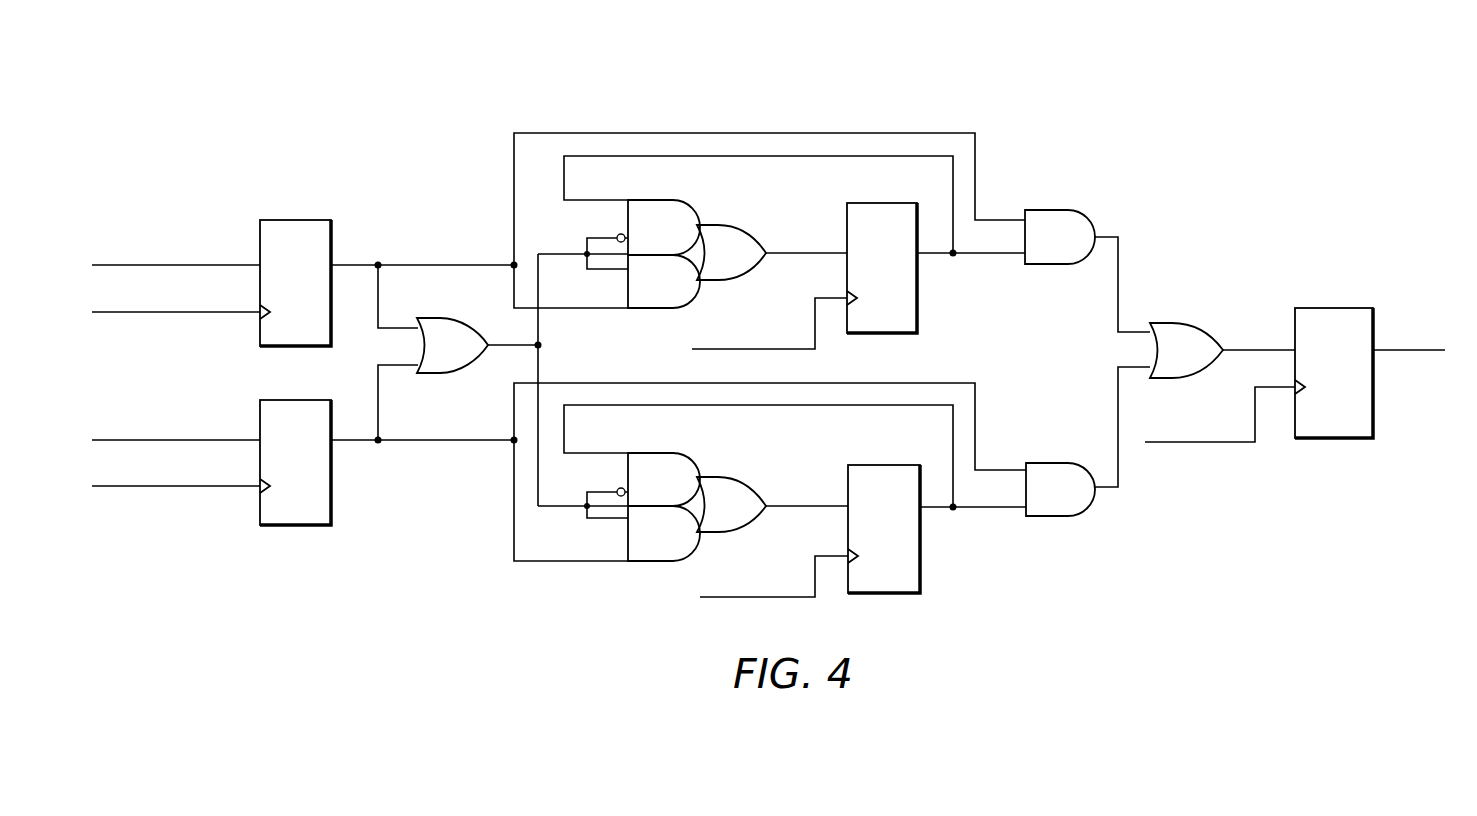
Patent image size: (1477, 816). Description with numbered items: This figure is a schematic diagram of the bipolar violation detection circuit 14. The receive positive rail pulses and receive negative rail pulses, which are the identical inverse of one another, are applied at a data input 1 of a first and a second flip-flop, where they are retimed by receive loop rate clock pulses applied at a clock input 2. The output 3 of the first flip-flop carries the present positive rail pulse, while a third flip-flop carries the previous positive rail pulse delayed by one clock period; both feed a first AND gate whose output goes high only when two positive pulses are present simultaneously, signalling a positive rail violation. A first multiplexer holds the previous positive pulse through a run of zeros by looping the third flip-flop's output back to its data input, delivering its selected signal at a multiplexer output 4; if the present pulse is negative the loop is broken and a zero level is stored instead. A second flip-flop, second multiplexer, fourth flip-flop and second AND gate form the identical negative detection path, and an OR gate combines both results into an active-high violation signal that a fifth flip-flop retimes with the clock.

The BPV detection circuit 14 is at (759, 87).
The data input pin 1 is at (176, 249).
The clock input pin 2 is at (176, 296).
The output pin 3 is at (422, 250).
The multiplexer output pin 4 is at (806, 238).